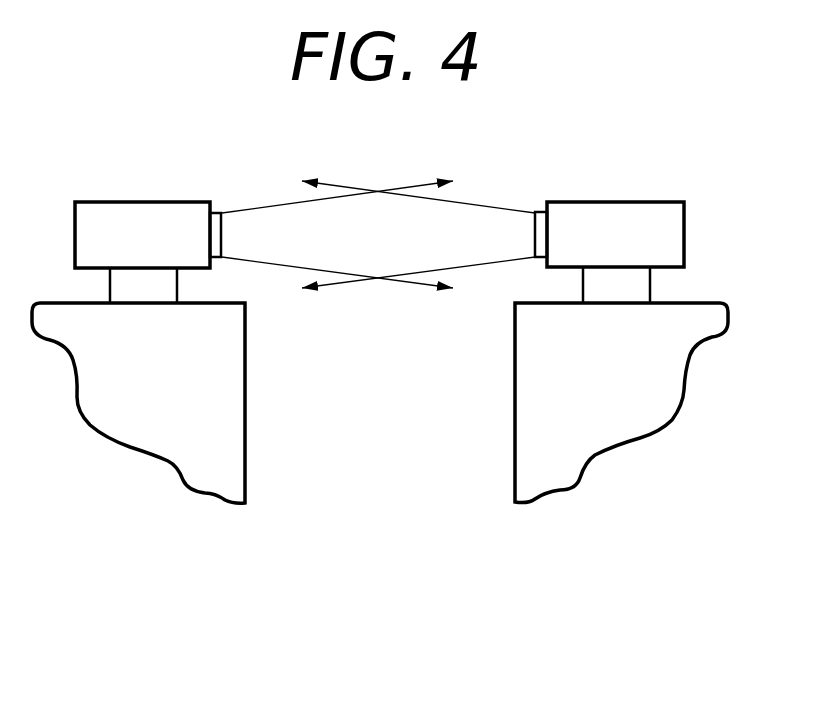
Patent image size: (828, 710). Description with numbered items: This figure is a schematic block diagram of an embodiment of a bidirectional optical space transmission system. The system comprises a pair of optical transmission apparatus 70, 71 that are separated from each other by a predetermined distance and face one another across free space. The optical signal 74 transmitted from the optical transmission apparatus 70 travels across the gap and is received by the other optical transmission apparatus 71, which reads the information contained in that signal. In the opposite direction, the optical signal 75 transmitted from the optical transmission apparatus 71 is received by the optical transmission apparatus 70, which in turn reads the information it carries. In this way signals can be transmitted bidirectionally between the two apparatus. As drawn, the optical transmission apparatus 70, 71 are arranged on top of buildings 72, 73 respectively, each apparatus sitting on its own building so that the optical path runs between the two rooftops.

The optical transmission apparatus 70 is at (112, 202).
The optical transmission apparatus 71 is at (643, 202).
The building 72 is at (145, 437).
The building 73 is at (640, 415).
The optical signal 74 is at (240, 208).
The optical signal 75 is at (500, 207).